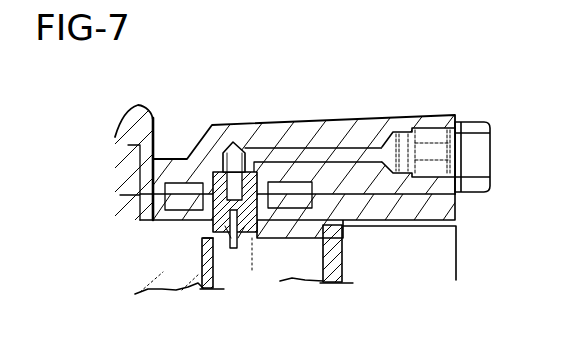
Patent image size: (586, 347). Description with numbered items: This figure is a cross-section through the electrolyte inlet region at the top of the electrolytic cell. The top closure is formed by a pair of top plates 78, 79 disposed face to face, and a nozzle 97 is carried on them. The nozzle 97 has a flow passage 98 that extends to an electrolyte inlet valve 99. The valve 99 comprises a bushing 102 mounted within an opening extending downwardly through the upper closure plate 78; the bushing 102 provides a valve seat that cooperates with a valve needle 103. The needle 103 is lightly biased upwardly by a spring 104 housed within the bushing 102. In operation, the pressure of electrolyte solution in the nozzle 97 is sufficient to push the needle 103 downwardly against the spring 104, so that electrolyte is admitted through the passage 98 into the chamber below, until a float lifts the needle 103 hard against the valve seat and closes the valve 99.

The top plate 78 is at (137, 145).
The top plate 79 is at (445, 205).
The nozzle 97 is at (347, 128).
The flow passage 98 is at (372, 150).
The electrolyte inlet valve 99 is at (207, 153).
The bushing 102 is at (256, 171).
The valve needle 103 is at (235, 142).
The spring 104 is at (232, 222).